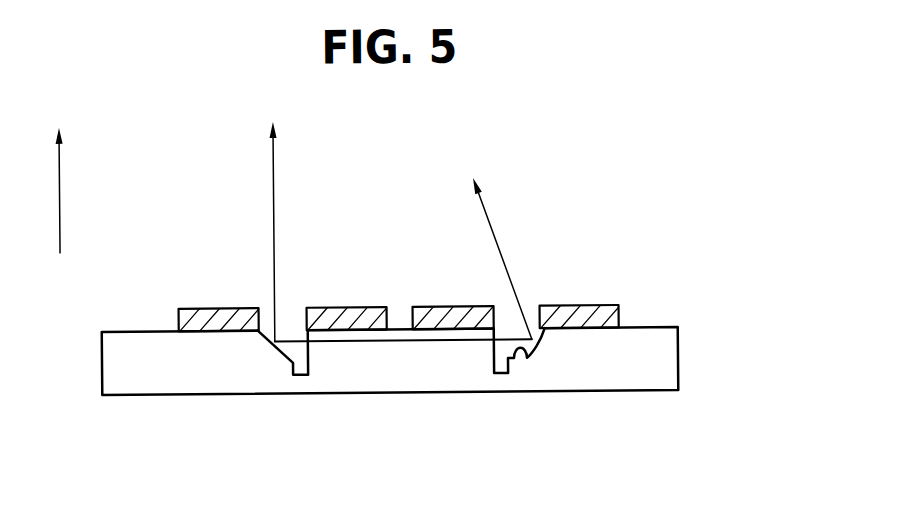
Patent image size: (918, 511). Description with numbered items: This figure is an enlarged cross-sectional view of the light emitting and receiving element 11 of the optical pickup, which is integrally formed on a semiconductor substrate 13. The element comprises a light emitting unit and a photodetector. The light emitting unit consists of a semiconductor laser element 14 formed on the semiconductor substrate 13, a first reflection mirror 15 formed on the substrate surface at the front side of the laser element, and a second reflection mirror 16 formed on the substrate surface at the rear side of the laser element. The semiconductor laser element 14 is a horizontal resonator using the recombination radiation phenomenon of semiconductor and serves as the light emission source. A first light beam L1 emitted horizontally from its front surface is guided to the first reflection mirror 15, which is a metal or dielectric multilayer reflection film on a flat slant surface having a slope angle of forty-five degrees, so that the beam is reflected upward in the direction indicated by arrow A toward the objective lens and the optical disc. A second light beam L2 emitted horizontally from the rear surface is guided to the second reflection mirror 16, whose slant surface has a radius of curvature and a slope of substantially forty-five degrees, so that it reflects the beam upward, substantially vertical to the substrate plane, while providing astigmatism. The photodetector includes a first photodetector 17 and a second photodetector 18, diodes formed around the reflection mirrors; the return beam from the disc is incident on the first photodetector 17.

The light emitting and receiving element 11 is at (662, 288).
The semiconductor substrate 13 is at (664, 364).
The semiconductor laser element 14 is at (382, 360).
The first reflection mirror 15 is at (258, 361).
The second reflection mirror 16 is at (528, 362).
The first photodetector 17 is at (218, 312).
The second photodetector 18 is at (472, 313).
The arrow A is at (72, 190).
The first light beam L1 is at (275, 192).
The second light beam L2 is at (483, 209).